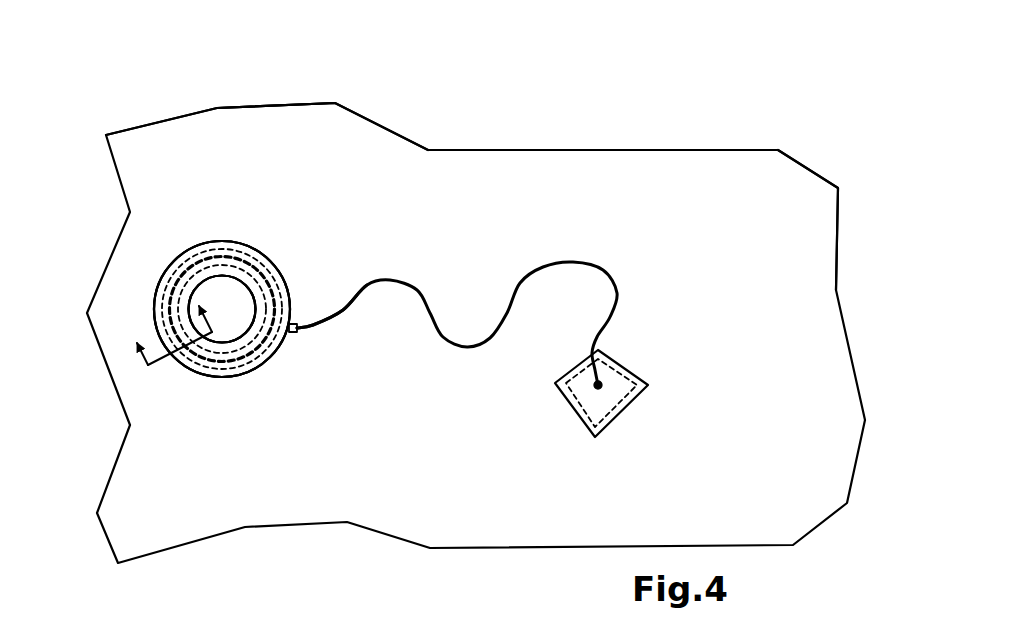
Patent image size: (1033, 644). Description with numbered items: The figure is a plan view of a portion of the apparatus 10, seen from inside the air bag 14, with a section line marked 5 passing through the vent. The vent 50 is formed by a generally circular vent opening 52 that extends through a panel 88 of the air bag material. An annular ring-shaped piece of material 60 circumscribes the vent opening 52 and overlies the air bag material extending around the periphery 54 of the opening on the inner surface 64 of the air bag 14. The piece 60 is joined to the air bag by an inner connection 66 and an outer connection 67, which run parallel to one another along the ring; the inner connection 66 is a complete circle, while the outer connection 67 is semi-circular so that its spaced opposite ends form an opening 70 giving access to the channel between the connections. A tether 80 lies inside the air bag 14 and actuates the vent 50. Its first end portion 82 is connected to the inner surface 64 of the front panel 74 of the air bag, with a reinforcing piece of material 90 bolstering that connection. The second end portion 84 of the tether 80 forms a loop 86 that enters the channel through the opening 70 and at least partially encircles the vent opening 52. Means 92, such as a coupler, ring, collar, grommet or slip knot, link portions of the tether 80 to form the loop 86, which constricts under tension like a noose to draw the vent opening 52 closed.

The apparatus 10 is at (86, 183).
The air bag 14 is at (355, 142).
The vent 50 is at (174, 237).
The vent opening 52 is at (207, 292).
The periphery 54 is at (208, 282).
The ring-shaped piece of material 60 is at (234, 242).
The inner surface 64 is at (638, 173).
The inner connection 66 is at (262, 352).
The outer connection 67 is at (224, 363).
The opening 70 is at (288, 353).
The panel 74 is at (520, 182).
The tether 80 is at (430, 307).
The first end portion 82 is at (592, 378).
The second end portion 84 is at (345, 310).
The loop 86 is at (184, 356).
The panel 88 is at (303, 135).
The reinforcing piece of material 90 is at (592, 405).
The means for linking portions of the tether 92 is at (294, 323).
The section line 5- 5 is at (171, 338).